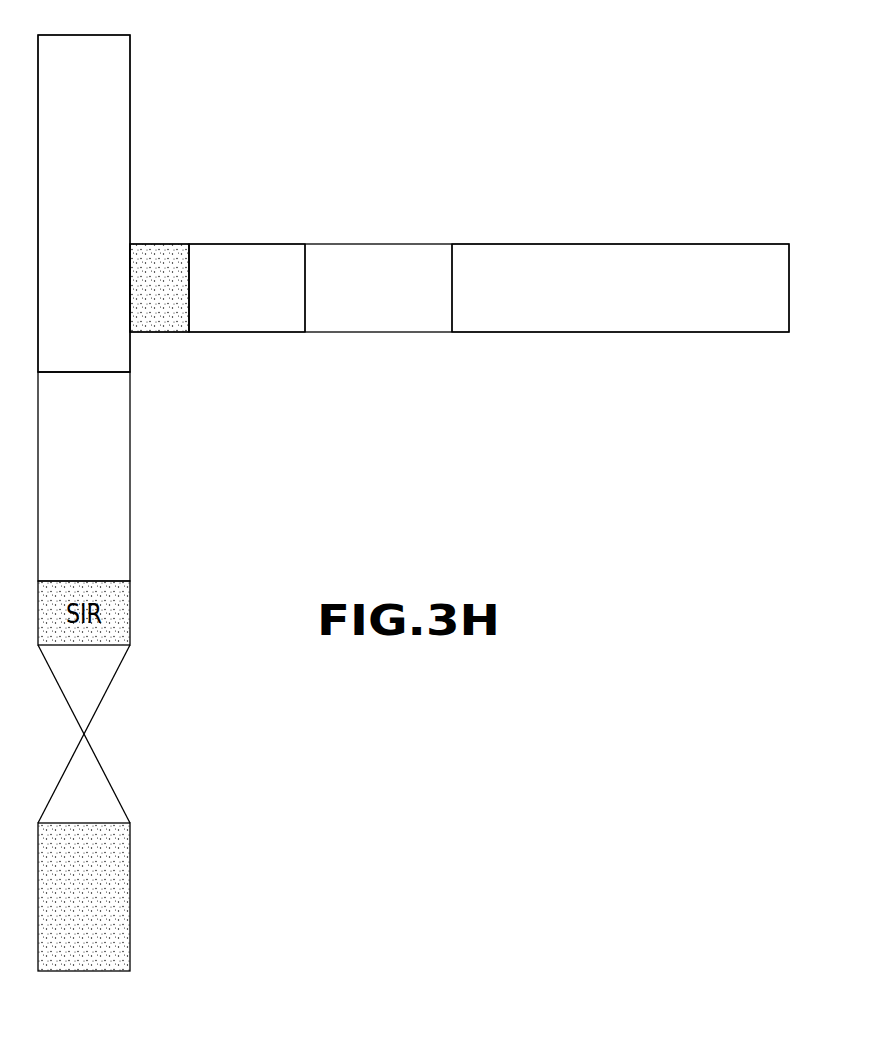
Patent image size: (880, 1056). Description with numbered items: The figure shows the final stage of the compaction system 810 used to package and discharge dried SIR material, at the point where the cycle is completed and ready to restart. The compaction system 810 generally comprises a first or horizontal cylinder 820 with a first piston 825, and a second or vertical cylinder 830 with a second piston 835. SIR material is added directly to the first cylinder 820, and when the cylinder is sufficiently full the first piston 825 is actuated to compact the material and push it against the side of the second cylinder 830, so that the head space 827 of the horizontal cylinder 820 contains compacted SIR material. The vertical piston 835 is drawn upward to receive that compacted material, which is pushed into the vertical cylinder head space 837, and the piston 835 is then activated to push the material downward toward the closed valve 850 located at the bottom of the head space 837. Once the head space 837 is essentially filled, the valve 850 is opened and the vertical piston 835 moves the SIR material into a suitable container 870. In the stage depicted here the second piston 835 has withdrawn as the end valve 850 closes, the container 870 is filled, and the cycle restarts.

The compaction system 810 is at (468, 120).
The first cylinder 820 is at (722, 244).
The first piston 825 is at (590, 267).
The head space 827 is at (208, 262).
The second cylinder 830 is at (130, 60).
The second piston 835 is at (112, 142).
The vertical cylinder head space 837 is at (110, 512).
The valve 850 is at (88, 685).
The container 870 is at (108, 928).